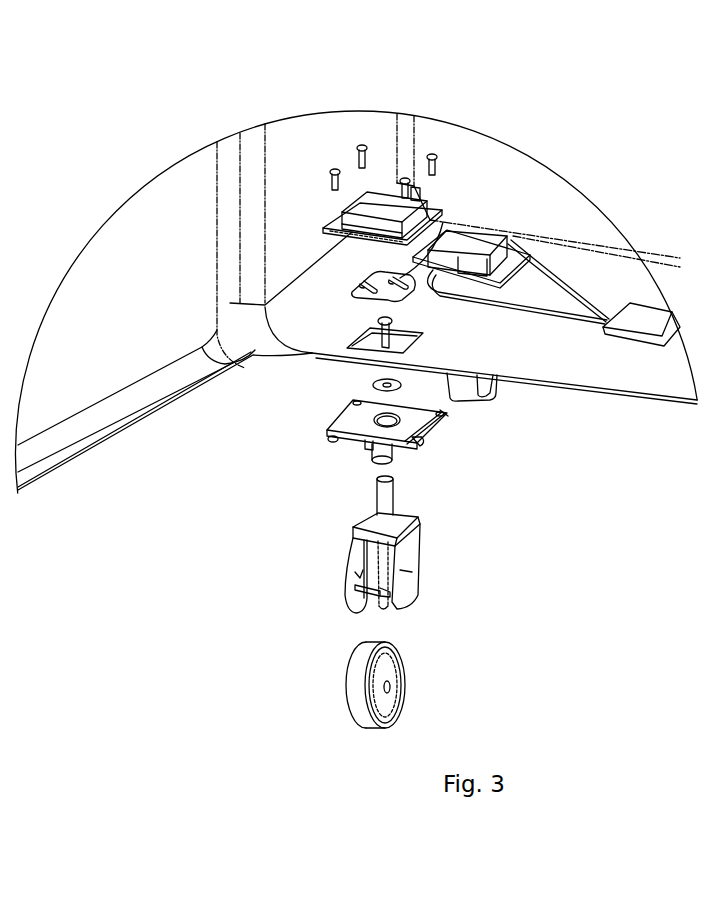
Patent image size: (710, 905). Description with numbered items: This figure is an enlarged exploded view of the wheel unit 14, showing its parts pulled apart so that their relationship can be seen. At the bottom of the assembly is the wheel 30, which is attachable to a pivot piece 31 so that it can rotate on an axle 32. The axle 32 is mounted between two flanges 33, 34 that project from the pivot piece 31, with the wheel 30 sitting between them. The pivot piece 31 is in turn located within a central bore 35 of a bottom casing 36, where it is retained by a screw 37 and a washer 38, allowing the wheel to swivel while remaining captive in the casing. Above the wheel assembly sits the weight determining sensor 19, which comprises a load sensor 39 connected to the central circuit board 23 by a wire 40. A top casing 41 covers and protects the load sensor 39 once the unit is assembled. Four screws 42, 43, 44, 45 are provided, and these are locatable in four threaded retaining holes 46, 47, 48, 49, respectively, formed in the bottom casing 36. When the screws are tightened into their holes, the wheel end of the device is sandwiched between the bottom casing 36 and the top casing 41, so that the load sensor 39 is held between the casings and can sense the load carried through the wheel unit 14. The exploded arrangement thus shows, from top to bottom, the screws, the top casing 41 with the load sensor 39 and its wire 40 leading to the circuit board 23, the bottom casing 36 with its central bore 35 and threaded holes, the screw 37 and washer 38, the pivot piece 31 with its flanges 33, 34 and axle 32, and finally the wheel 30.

The wheel unit 14 is at (394, 578).
The weight determining sensor 19 is at (342, 212).
The central circuit board 23 is at (645, 320).
The wheel 30 is at (395, 663).
The pivot piece 31 is at (385, 505).
The axle 32 is at (365, 595).
The flange 33 is at (355, 574).
The flange 34 is at (400, 573).
The central bore 35 is at (378, 453).
The bottom casing 36 is at (418, 440).
The screw 37 is at (386, 282).
The washer 38 is at (373, 385).
The load sensor 39 is at (452, 230).
The wire 40 is at (565, 284).
The top casing 41 is at (327, 223).
The screw 42 is at (330, 180).
The screw 43 is at (358, 167).
The screw 44 is at (435, 170).
The screw 45 is at (398, 186).
The threaded retaining hole 46 is at (366, 447).
The threaded retaining hole 47 is at (355, 403).
The threaded retaining hole 48 is at (448, 414).
The threaded retaining hole 49 is at (407, 436).